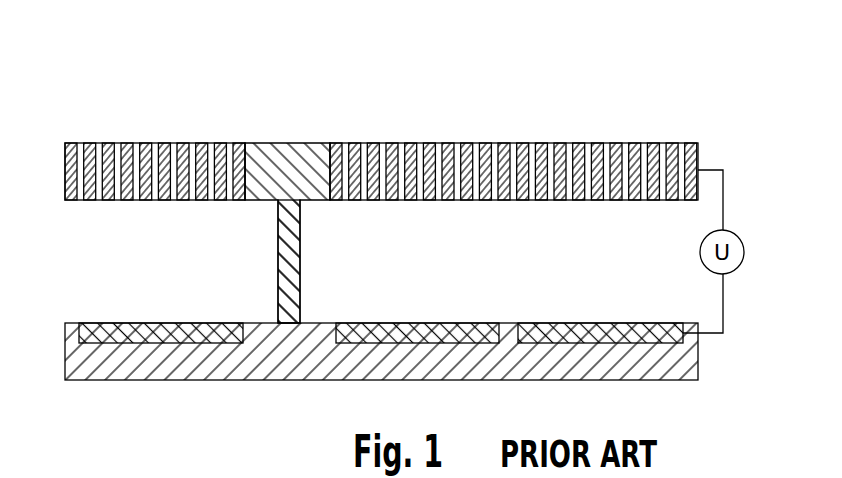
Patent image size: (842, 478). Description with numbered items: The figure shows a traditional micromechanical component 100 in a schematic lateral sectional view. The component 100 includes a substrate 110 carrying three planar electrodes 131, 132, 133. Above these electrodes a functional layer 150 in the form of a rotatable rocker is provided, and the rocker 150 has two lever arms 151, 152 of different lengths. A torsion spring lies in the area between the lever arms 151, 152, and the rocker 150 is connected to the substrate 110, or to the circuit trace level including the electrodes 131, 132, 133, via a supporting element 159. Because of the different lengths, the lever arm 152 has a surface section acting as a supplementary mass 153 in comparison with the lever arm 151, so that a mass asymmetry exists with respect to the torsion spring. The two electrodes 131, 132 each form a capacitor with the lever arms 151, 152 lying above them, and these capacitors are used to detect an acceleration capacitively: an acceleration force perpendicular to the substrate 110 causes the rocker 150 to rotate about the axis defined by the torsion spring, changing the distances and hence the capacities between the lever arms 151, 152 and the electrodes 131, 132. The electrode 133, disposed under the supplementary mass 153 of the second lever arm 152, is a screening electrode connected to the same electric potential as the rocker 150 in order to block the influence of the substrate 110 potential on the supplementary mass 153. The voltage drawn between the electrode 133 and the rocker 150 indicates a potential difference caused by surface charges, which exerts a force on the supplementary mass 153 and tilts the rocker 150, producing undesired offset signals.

The micromechanical component 100 is at (161, 60).
The substrate 110 is at (307, 355).
The electrode 131 is at (167, 323).
The electrode 132 is at (428, 323).
The electrode 133 is at (605, 323).
The functional layer 150 is at (296, 143).
The lever arm 151 is at (122, 143).
The lever arm 152 is at (474, 143).
The supplementary mass 153 is at (697, 130).
The supporting element 159 is at (300, 242).